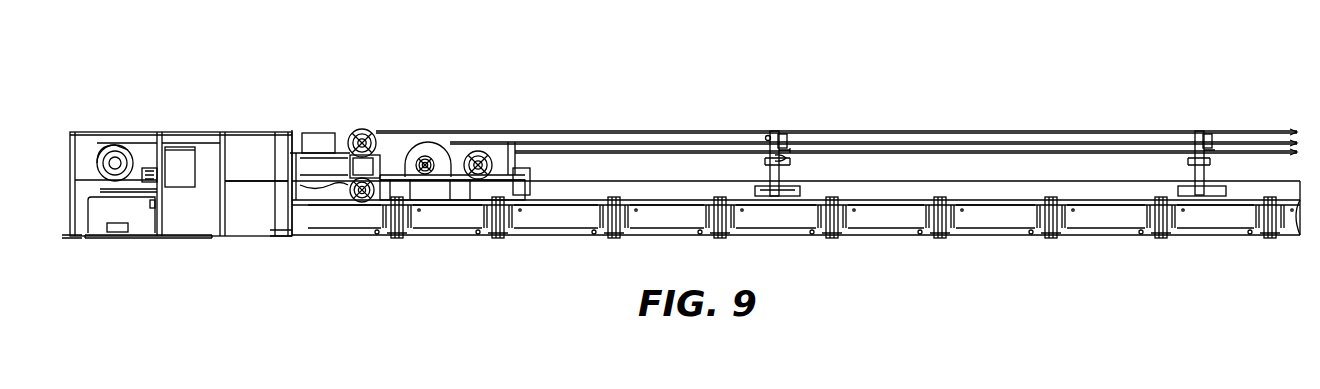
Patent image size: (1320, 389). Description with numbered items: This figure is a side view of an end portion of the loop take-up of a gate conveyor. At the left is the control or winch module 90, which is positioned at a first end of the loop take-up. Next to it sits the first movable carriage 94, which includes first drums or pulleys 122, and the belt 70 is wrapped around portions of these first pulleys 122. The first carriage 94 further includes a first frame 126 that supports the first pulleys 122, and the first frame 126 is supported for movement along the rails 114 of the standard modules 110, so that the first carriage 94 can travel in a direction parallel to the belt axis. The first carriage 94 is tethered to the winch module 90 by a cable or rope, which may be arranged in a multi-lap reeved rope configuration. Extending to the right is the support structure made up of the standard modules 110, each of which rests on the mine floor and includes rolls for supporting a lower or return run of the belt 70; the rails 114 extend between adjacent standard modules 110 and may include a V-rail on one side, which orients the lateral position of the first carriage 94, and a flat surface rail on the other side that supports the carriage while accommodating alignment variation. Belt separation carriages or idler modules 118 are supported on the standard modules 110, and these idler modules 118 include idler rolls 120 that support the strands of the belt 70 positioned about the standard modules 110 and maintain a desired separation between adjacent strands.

The winch module 90 is at (62, 250).
The first movable carriage 94 is at (312, 116).
The first pulleys 122 is at (416, 140).
The first frame 126 is at (466, 186).
The belt 70 is at (1040, 130).
The standard modules 110 is at (1050, 238).
The rails 114 is at (1112, 205).
The idler modules 118 is at (780, 136).
The idler rolls 120 is at (767, 157).